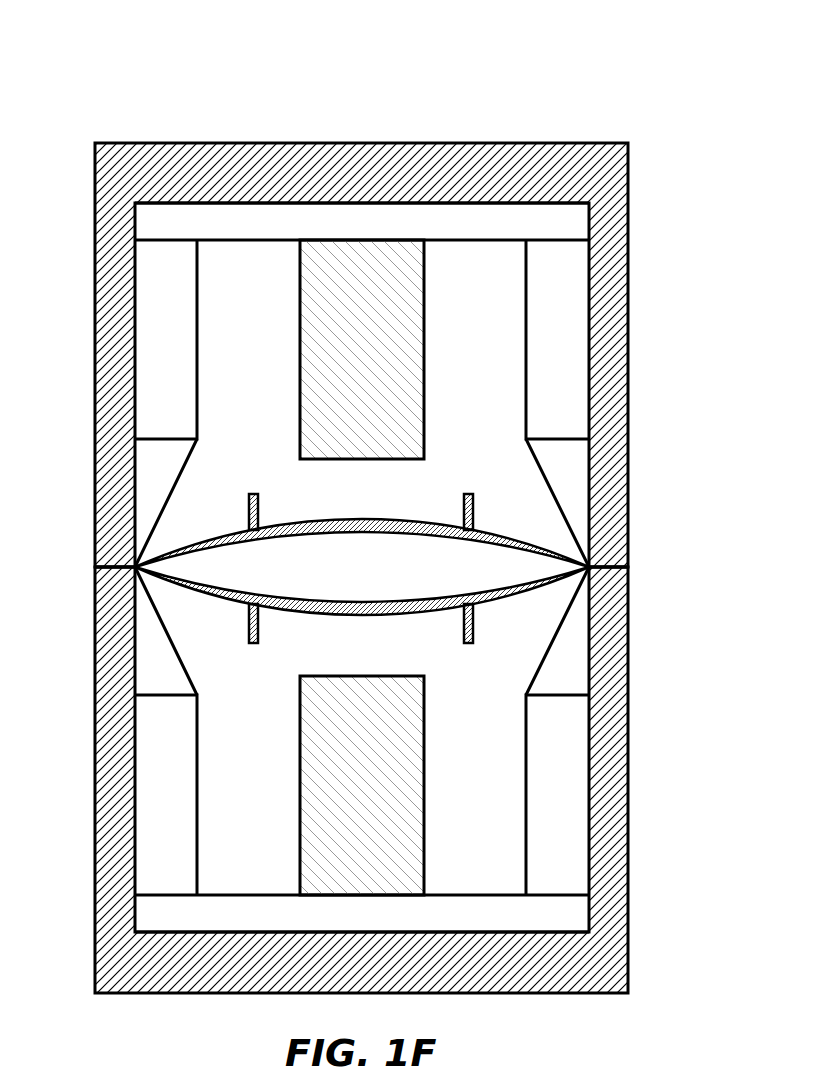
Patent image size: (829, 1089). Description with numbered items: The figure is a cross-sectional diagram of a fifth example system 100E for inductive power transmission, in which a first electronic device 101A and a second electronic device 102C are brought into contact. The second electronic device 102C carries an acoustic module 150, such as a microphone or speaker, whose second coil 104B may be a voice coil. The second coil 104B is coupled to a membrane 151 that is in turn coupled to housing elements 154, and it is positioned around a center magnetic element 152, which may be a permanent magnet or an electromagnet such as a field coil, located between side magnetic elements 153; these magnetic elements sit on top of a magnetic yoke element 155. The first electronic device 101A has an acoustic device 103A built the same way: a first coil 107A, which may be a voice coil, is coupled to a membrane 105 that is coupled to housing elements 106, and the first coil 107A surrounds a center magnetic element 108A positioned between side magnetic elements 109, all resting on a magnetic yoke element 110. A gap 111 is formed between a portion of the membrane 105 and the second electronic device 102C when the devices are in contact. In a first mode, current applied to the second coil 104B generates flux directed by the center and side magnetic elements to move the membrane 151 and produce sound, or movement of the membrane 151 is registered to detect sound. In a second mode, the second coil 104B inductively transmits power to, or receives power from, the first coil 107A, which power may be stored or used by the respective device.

The fifth example system 100E is at (131, 90).
The second electronic device 102C is at (628, 427).
The first electronic device 101A is at (628, 703).
The acoustic module 150 is at (410, 196).
The magnetic yoke element 155 is at (573, 223).
The magnetic yoke element 110 is at (573, 915).
The acoustic device 103A is at (575, 940).
The side magnetic elements 153 is at (148, 336).
The center magnetic element 152 is at (402, 345).
The housing elements 154 is at (148, 484).
The housing elements 106 is at (148, 646).
The side magnetic elements 109 is at (148, 778).
The center magnetic element 108A is at (402, 778).
The gap 111 is at (135, 561).
The membrane 151 is at (545, 548).
The membrane 105 is at (545, 587).
The second coil 104B is at (474, 512).
The first coil 107A is at (474, 624).